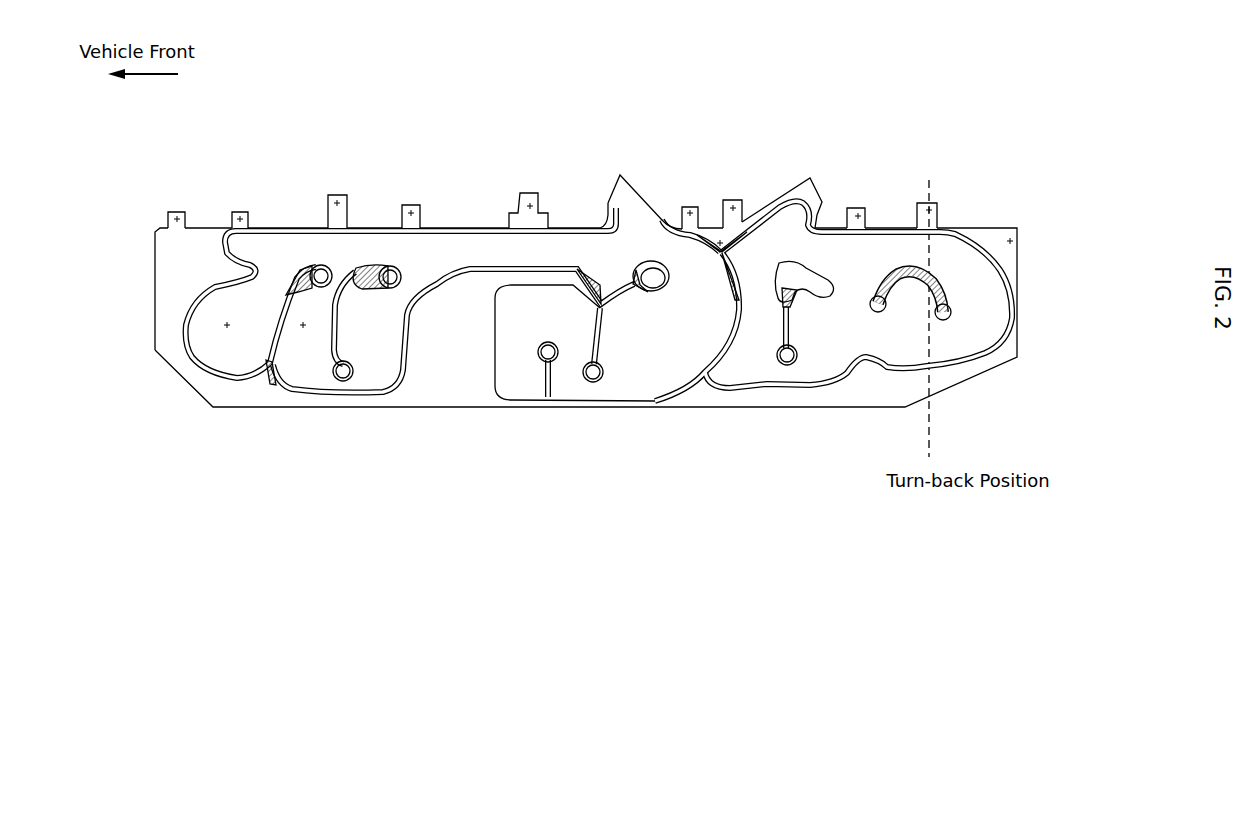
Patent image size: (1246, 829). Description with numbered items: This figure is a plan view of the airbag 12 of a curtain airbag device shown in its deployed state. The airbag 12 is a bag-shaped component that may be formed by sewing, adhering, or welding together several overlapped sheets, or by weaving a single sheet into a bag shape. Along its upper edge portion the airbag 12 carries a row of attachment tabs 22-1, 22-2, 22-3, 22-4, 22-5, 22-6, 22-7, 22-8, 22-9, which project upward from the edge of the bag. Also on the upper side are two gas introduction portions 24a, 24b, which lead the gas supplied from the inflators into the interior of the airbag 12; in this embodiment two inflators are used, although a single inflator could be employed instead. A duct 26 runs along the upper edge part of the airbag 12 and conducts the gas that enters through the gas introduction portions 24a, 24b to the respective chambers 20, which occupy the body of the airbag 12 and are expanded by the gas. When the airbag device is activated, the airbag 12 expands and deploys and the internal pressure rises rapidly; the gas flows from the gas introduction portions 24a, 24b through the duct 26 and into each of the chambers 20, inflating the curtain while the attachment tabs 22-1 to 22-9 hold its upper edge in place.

The airbag 12 is at (481, 104).
The chamber 20 is at (648, 386).
The attachment tab 22-1 is at (177, 211).
The attachment tab 22-2 is at (241, 211).
The attachment tab 22-3 is at (339, 195).
The attachment tab 22-4 is at (407, 205).
The attachment tab 22-5 is at (530, 193).
The attachment tab 22-6 is at (688, 208).
The attachment tab 22-7 is at (733, 201).
The attachment tab 22-8 is at (859, 209).
The attachment tab 22-9 is at (930, 204).
The gas introduction portion 24a is at (618, 180).
The gas introduction portion 24b is at (797, 183).
The duct 26 is at (470, 260).